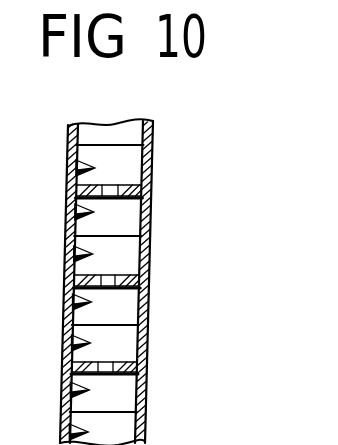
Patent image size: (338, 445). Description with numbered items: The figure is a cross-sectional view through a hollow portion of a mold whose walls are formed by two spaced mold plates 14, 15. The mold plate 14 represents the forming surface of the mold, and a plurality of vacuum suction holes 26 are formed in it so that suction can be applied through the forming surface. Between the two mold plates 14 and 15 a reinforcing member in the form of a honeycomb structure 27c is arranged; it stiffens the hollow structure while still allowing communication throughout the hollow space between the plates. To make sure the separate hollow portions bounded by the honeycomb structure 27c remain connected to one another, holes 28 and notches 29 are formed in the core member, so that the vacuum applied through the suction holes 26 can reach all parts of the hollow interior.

The mold plate 14 is at (147, 215).
The mold plate 15 is at (68, 233).
The vacuum suction holes 26 is at (146, 150).
The honeycomb structure 27c is at (127, 258).
The holes 28 is at (99, 366).
The notches 29 is at (67, 293).